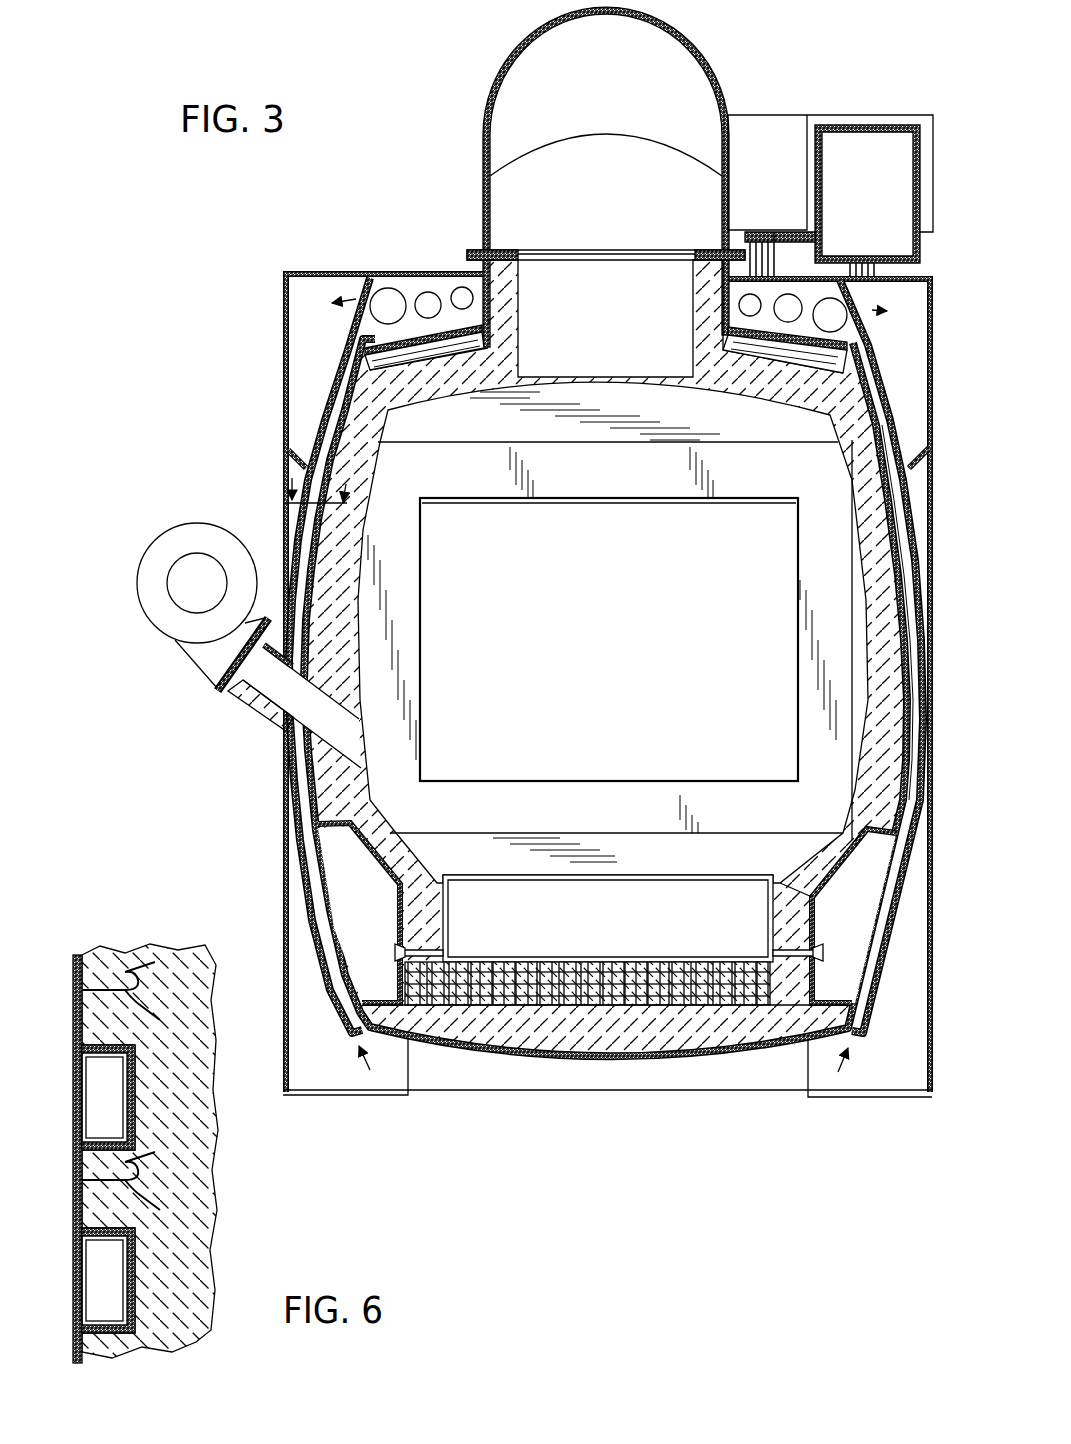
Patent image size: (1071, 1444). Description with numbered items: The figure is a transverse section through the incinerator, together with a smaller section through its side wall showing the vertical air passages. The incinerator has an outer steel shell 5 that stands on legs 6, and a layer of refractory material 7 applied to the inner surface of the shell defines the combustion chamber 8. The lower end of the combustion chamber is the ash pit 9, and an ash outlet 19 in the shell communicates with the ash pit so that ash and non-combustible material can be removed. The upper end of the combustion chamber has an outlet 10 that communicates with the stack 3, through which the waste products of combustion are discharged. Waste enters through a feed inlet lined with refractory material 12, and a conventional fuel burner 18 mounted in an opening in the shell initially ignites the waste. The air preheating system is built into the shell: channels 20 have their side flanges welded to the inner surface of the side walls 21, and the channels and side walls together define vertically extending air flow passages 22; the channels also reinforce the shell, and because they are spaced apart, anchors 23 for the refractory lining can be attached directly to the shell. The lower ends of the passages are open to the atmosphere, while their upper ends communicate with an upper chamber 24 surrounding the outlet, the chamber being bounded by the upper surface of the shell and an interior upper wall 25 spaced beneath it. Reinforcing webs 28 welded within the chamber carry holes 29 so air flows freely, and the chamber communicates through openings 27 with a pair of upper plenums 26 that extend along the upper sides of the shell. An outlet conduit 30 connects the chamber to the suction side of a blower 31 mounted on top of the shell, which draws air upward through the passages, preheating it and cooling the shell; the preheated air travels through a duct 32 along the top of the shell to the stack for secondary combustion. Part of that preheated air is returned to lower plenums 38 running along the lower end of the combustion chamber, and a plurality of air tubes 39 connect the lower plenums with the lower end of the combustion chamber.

In FIG. 3, the stack 3 is at (698, 40).
In FIG. 3, the outer steel shell 5 is at (895, 408).
In FIG. 6, the outer steel shell 5 is at (72, 1097).
In FIG. 3, the legs 6 is at (830, 1115).
In FIG. 3, the refractory material 7 is at (877, 567).
In FIG. 6, the refractory material 7 is at (203, 1130).
In FIG. 3, the combustion chamber 8 is at (831, 789).
In FIG. 3, the ash pit 9 is at (651, 880).
In FIG. 3, the outlet 10 is at (505, 284).
In FIG. 3, the refractory material 12 is at (600, 500).
In FIG. 3, the fuel burner 18 is at (258, 692).
In FIG. 3, the ash outlet 19 is at (527, 879).
In FIG. 3, the channels 20 is at (335, 415).
In FIG. 6, the channels 20 is at (130, 1078).
In FIG. 3, the side walls 21 is at (335, 378).
In FIG. 6, the side walls 21 is at (80, 1178).
In FIG. 3, the air flow passages 22 is at (320, 447).
In FIG. 6, the air flow passages 22 is at (90, 1067).
In FIG. 6, the anchors 23 is at (160, 975).
In FIG. 3, the upper chamber 24 is at (400, 282).
In FIG. 3, the interior upper wall 25 is at (482, 320).
In FIG. 3, the upper plenums 26 is at (300, 287).
In FIG. 3, the openings 27 is at (355, 315).
In FIG. 3, the reinforcing webs 28 is at (410, 325).
In FIG. 3, the holes 29 is at (442, 292).
In FIG. 3, the outlet conduit 30 is at (763, 250).
In FIG. 3, the blower 31 is at (782, 122).
In FIG. 3, the duct 32 is at (925, 146).
In FIG. 3, the lower plenums 38 is at (350, 880).
In FIG. 3, the air tubes 39 is at (448, 952).